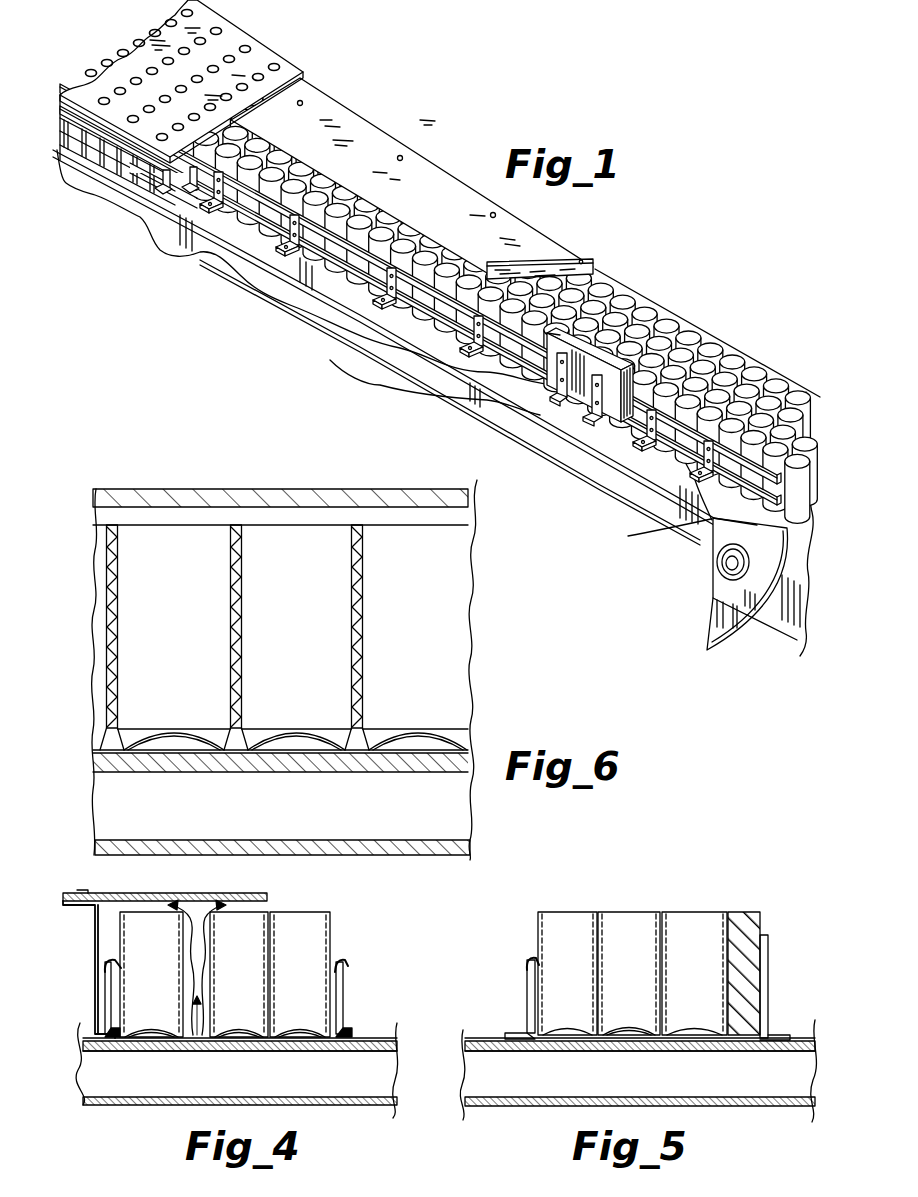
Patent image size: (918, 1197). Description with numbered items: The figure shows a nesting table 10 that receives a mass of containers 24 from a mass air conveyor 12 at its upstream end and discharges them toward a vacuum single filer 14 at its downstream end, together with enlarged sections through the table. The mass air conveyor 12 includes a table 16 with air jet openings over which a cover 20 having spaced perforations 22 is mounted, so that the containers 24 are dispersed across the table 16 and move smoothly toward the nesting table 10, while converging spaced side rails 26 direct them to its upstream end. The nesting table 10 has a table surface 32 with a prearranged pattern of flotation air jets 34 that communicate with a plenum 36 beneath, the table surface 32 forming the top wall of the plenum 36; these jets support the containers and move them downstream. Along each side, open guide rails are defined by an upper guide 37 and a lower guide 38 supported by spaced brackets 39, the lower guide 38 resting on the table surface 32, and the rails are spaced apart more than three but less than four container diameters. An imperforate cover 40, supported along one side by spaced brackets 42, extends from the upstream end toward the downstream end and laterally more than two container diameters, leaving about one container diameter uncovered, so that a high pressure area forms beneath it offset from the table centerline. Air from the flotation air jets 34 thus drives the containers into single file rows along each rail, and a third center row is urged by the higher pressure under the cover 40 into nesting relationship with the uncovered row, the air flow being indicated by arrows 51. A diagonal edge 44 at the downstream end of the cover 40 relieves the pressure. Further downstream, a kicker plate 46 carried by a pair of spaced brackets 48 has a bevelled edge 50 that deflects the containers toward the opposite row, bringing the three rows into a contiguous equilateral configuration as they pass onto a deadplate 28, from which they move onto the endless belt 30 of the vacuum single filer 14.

In FIG. 1, the nesting table 10 is at (243, 302).
In FIG. 6, the nesting table 10 is at (374, 863).
In FIG. 4, the nesting table 10 is at (237, 1070).
In FIG. 5, the nesting table 10 is at (756, 1110).
In FIG. 1, the mass air conveyor 12 is at (117, 192).
In FIG. 1, the vacuum single filer 14 is at (700, 594).
In FIG. 1, the table 16 is at (137, 208).
In FIG. 1, the cover 20 is at (238, 35).
In FIG. 1, the perforations 22 is at (283, 63).
In FIG. 1, the containers 24 is at (655, 346).
In FIG. 6, the containers 24 is at (186, 611).
In FIG. 4, the containers 24 is at (163, 985).
In FIG. 5, the containers 24 is at (579, 988).
In FIG. 1, the side rails 26 is at (152, 205).
In FIG. 1, the deadplate 28 is at (653, 534).
In FIG. 1, the endless belt 30 is at (707, 650).
In FIG. 1, the table surface 32 is at (360, 356).
In FIG. 6, the table surface 32 is at (113, 773).
In FIG. 6, the flotation air jets 34 is at (388, 770).
In FIG. 4, the flotation air jets 34 is at (261, 1051).
In FIG. 5, the flotation air jets 34 is at (682, 1051).
In FIG. 1, the plenum 36 is at (307, 323).
In FIG. 6, the plenum 36 is at (280, 848).
In FIG. 4, the plenum 36 is at (150, 1106).
In FIG. 5, the plenum 36 is at (522, 1106).
In FIG. 4, the upper guide 37 is at (113, 962).
In FIG. 5, the upper guide 37 is at (535, 962).
In FIG. 1, the lower guide 38 is at (313, 290).
In FIG. 4, the lower guide 38 is at (113, 1030).
In FIG. 5, the lower guide 38 is at (527, 1035).
In FIG. 1, the brackets 39 is at (215, 292).
In FIG. 4, the brackets 39 is at (108, 985).
In FIG. 5, the brackets 39 is at (527, 988).
In FIG. 1, the imperforate cover 40 is at (335, 131).
In FIG. 6, the imperforate cover 40 is at (226, 491).
In FIG. 4, the imperforate cover 40 is at (236, 893).
In FIG. 1, the brackets 42 is at (400, 157).
In FIG. 4, the brackets 42 is at (75, 903).
In FIG. 1, the diagonal edge 44 is at (557, 277).
In FIG. 1, the kicker plate 46 is at (545, 392).
In FIG. 5, the kicker plate 46 is at (760, 912).
In FIG. 1, the brackets 48 is at (576, 414).
In FIG. 5, the brackets 48 is at (768, 985).
In FIG. 1, the bevelled edge 50 is at (560, 334).
In FIG. 4, the arrows 51 is at (185, 933).